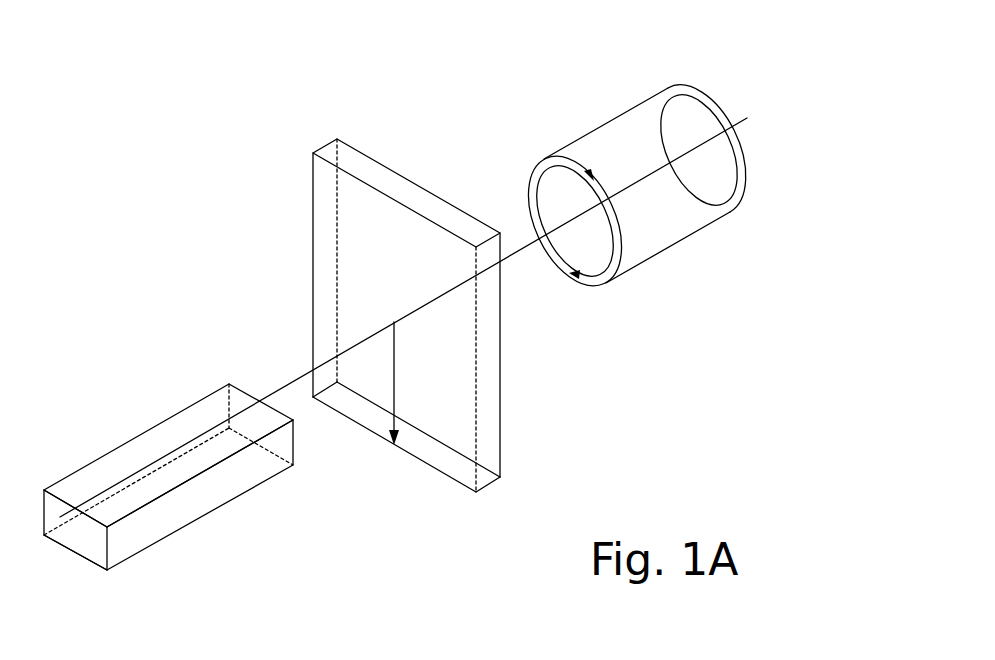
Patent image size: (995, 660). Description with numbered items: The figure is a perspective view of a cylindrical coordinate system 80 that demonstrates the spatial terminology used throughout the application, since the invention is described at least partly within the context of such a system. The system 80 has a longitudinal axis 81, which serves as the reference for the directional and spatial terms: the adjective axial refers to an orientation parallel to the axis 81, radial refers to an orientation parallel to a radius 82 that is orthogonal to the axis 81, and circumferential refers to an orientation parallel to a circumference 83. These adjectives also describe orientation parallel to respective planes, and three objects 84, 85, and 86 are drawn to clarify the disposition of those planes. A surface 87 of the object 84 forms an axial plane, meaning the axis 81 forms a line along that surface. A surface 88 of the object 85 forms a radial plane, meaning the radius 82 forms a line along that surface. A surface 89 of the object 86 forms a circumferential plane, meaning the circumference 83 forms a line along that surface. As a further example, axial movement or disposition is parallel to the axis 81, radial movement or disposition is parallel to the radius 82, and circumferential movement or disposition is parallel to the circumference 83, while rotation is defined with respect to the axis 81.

The cylindrical coordinate system 80 is at (266, 193).
The longitudinal axis 81 is at (738, 122).
The radius 82 is at (394, 378).
The circumference 83 is at (525, 185).
The object 84 is at (133, 558).
The object 85 is at (514, 487).
The object 86 is at (673, 263).
The surface 87 is at (128, 460).
The surface 88 is at (327, 272).
The surface 89 is at (603, 122).